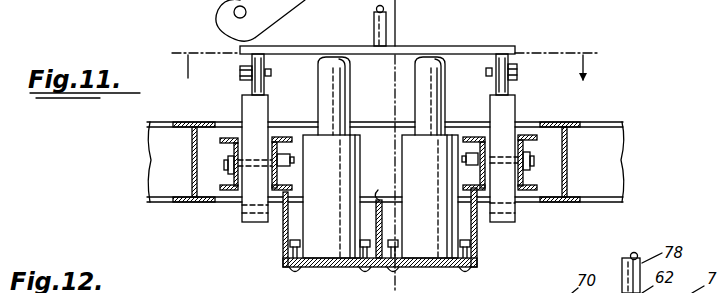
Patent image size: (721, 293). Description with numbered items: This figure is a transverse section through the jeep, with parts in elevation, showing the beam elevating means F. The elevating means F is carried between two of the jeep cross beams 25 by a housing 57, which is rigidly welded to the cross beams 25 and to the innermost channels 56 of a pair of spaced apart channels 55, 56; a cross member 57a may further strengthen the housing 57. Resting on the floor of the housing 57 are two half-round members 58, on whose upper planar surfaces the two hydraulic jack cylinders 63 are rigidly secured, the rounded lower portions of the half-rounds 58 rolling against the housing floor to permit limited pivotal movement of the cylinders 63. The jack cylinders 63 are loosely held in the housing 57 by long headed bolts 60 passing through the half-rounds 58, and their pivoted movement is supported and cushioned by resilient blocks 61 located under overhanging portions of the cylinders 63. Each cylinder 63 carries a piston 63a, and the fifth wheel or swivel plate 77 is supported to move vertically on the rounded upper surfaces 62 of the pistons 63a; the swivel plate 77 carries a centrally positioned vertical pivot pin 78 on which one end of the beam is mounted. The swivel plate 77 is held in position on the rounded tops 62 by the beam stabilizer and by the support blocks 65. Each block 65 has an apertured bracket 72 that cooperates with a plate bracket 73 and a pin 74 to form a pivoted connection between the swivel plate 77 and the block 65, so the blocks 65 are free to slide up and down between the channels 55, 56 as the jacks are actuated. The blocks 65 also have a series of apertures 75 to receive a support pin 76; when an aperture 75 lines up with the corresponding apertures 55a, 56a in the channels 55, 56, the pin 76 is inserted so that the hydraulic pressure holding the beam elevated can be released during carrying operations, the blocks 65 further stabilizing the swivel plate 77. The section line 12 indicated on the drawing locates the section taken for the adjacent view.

The section line 12- 12 is at (382, 58).
The jeep cross beam 25 is at (624, 162).
The outer channel 55 is at (222, 138).
The aperture in channel 55a is at (222, 198).
The innermost channel 56 is at (280, 136).
The aperture in channel 56a is at (293, 153).
The housing 57 is at (472, 262).
The cross member 57a is at (378, 206).
The half-round member 58 is at (292, 268).
The long headed bolt 60 is at (462, 270).
The resilient block 61 is at (322, 262).
The rounded upper surface 62 is at (332, 58).
The hydraulic jack cylinder 63 is at (342, 186).
The piston 63a is at (336, 86).
The support block 65 is at (248, 113).
The apertured bracket 72 is at (242, 92).
The plate bracket 73 is at (259, 52).
The pin 74 is at (240, 73).
The aperture 75 is at (240, 222).
The support pin 76 is at (228, 164).
The swivel plate 77 is at (296, 47).
The vertical pivot pin 78 is at (388, 17).
The elevating means F is at (325, 218).